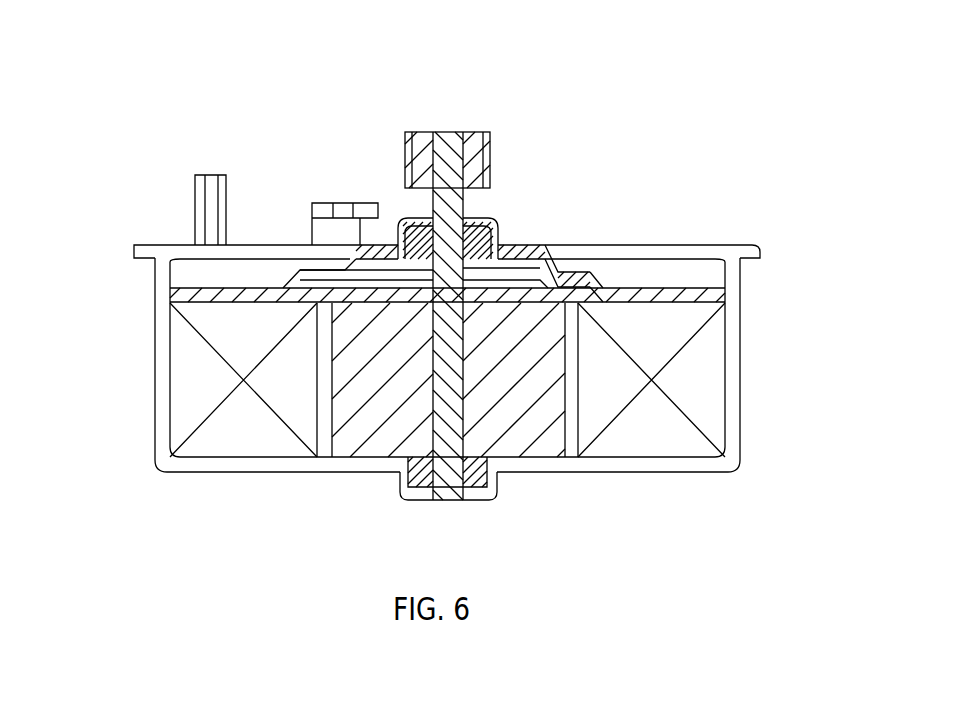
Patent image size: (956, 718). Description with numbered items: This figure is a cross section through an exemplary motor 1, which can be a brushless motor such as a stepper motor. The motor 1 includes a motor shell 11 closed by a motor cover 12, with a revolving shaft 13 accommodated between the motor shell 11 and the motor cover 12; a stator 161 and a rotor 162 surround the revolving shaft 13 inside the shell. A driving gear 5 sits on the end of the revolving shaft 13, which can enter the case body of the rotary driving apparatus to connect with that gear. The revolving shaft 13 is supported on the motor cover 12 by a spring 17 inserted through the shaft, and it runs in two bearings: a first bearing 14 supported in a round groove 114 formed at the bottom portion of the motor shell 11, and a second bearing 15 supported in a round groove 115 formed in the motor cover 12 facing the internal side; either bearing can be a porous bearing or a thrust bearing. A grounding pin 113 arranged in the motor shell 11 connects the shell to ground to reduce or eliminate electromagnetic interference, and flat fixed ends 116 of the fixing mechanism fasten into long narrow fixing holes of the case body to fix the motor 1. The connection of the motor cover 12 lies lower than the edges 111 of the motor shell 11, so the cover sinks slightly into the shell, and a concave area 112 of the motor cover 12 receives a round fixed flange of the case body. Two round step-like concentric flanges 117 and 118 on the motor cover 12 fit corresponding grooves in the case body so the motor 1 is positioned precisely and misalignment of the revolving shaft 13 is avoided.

The motor 1 is at (242, 68).
The driving gear 5 is at (493, 152).
The motor shell 11 is at (165, 473).
The motor cover 12 is at (735, 298).
The revolving shaft 13 is at (438, 130).
The first bearing 14 is at (490, 500).
The second bearing 15 is at (412, 222).
The spring 17 is at (504, 250).
The edges of the motor shell 111 is at (134, 252).
The concave area 112 is at (186, 250).
The grounding pin 113 is at (200, 196).
The round groove 114 is at (402, 486).
The round groove 115 is at (490, 220).
The flat fixed ends 116 is at (312, 211).
The round step-like concentric flange 117 is at (600, 272).
The round step-like concentric flange 118 is at (556, 250).
The stator 161 is at (690, 455).
The rotor 162 is at (535, 450).